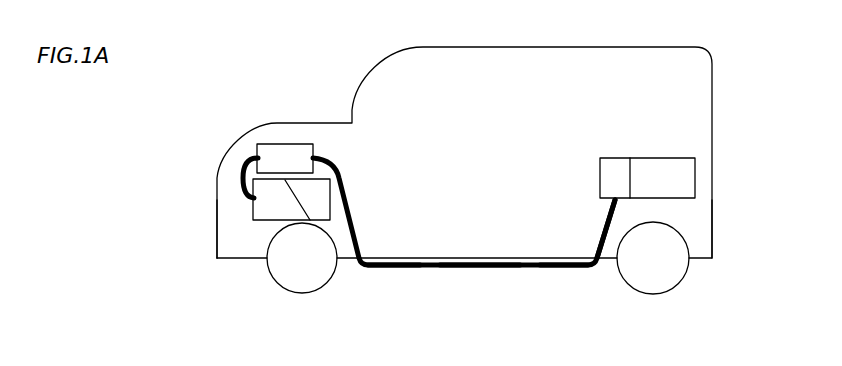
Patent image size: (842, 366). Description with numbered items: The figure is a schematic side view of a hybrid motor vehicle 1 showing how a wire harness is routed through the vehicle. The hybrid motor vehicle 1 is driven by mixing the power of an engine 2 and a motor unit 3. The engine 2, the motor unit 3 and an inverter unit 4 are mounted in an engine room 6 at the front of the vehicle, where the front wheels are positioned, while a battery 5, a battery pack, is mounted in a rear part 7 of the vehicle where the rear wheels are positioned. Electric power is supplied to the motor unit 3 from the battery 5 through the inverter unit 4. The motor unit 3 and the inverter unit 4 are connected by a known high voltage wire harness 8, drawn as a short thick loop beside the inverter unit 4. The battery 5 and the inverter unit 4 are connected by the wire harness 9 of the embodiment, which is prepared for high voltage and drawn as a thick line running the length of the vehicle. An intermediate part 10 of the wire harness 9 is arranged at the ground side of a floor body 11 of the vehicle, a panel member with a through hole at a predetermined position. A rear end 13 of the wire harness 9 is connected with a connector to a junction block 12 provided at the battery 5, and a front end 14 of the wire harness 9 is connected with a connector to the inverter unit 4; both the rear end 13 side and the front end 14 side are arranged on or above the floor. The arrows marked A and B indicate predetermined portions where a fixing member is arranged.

The hybrid motor vehicle 1 is at (322, 59).
The engine 2 is at (317, 213).
The motor unit 3 is at (263, 215).
The inverter unit 4 is at (275, 155).
The battery 5 is at (680, 175).
The engine room 6 is at (233, 250).
The rear part 7 is at (703, 218).
The high voltage wire harness 8 is at (243, 170).
The wire harness 9 is at (482, 270).
The intermediate part 10 is at (392, 268).
The floor body 11 is at (562, 263).
The junction block 12 is at (613, 190).
The rear end 13 is at (610, 205).
The front end 14 is at (325, 155).